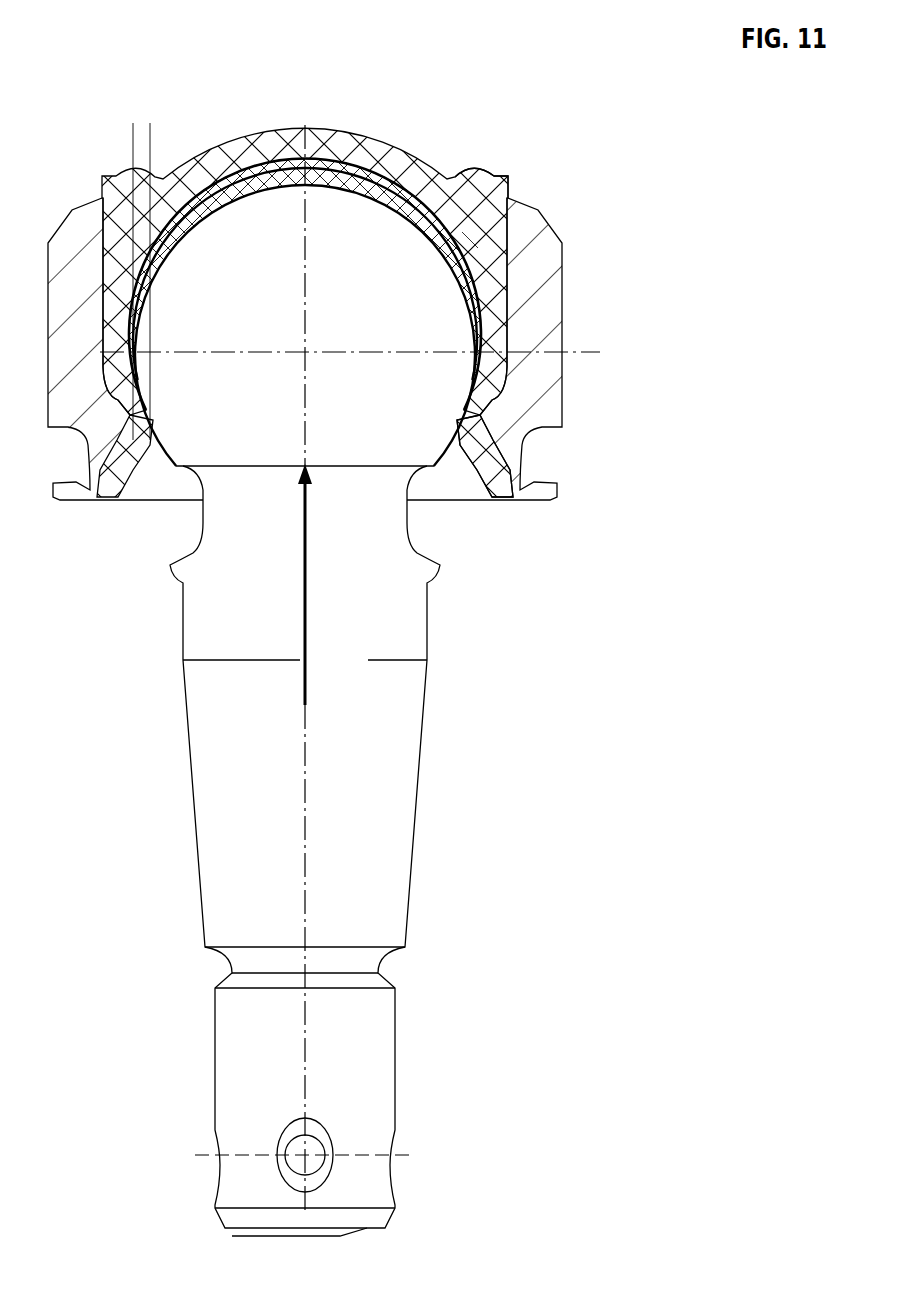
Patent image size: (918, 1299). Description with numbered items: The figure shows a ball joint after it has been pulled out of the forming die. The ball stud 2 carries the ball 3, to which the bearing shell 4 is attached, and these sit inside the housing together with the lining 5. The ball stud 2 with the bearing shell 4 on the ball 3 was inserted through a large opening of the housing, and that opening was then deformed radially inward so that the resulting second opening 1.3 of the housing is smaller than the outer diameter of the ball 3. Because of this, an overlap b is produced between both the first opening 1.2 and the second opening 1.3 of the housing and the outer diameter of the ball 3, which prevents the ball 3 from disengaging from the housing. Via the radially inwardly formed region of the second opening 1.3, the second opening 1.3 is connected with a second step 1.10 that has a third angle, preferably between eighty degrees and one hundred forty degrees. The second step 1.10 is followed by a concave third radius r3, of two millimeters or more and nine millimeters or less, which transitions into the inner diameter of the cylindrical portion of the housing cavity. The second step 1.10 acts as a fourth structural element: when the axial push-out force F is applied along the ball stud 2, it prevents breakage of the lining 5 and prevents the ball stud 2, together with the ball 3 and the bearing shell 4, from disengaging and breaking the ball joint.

The first opening 1.2 is at (462, 470).
The second opening 1.3 is at (448, 235).
The second step 1.10 is at (478, 240).
The ball stud 2 is at (457, 627).
The ball 3 is at (385, 371).
The bearing shell 4 is at (473, 325).
The lining 5 is at (473, 278).
The axial force/push-out force F is at (315, 584).
The overlap b is at (190, 143).
The third radius r3 is at (136, 244).